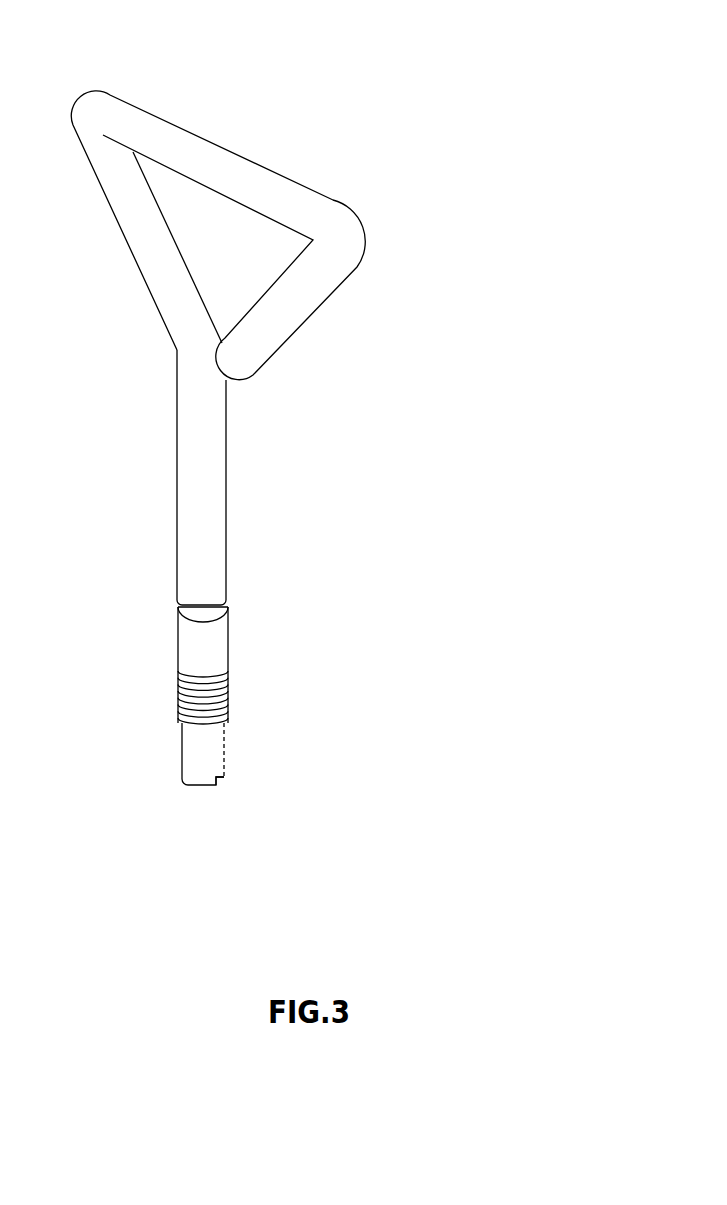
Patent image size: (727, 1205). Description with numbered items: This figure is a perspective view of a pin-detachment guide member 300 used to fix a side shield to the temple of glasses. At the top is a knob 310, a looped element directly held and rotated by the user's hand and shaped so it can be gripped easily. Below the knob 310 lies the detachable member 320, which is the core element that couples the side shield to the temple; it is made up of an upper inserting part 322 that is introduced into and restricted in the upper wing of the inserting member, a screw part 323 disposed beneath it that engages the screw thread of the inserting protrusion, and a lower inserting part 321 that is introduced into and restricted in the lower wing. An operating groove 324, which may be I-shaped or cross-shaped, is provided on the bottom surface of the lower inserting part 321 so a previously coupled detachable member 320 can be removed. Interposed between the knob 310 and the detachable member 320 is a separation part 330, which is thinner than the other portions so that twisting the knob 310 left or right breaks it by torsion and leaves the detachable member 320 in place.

The pin-detachment guide member 300 is at (480, 46).
The knob 310 is at (333, 212).
The detachable member 320 is at (357, 723).
The lower inserting part 321 is at (220, 750).
The upper inserting part 322 is at (220, 645).
The screw part 323 is at (229, 692).
The operating groove 324 is at (291, 820).
The separation part 330 is at (223, 603).